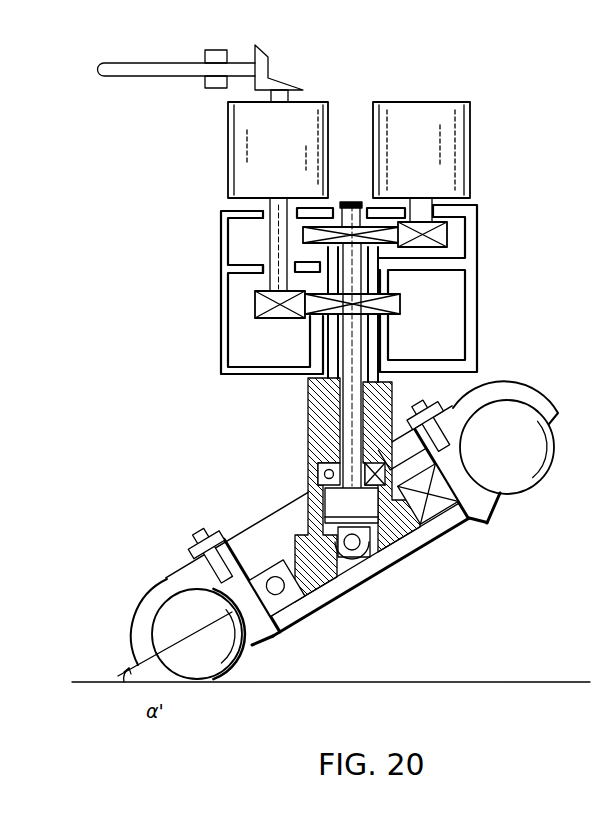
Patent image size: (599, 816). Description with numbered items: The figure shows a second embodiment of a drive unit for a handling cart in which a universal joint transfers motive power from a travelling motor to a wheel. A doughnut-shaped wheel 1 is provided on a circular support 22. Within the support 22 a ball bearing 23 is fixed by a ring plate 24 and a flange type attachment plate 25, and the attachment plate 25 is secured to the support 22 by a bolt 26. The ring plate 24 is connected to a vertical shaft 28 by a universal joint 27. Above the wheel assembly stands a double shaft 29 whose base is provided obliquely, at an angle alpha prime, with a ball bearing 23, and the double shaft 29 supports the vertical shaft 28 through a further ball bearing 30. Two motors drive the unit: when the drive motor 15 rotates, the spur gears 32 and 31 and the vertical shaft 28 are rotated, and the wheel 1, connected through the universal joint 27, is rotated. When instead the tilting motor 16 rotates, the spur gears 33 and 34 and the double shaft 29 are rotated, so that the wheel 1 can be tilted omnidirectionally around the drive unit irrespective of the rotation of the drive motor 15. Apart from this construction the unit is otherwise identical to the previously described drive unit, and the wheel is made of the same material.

The wheel 1 is at (204, 683).
The drive motor 15 is at (455, 149).
The tilting motor 16 is at (240, 143).
The circular support 22 is at (147, 600).
The ball bearing 23 is at (256, 588).
The ring plate 24 is at (306, 616).
The flange type attachment plate 25 is at (244, 570).
The bolt 26 is at (200, 550).
The universal joint 27 is at (372, 552).
The vertical shaft 28 is at (331, 405).
The double shaft 29 is at (318, 445).
The ball bearing 30 is at (320, 472).
The spur gear 31 is at (303, 240).
The spur gear 32 is at (447, 240).
The spur gear 33 is at (262, 305).
The spur gear 34 is at (395, 303).